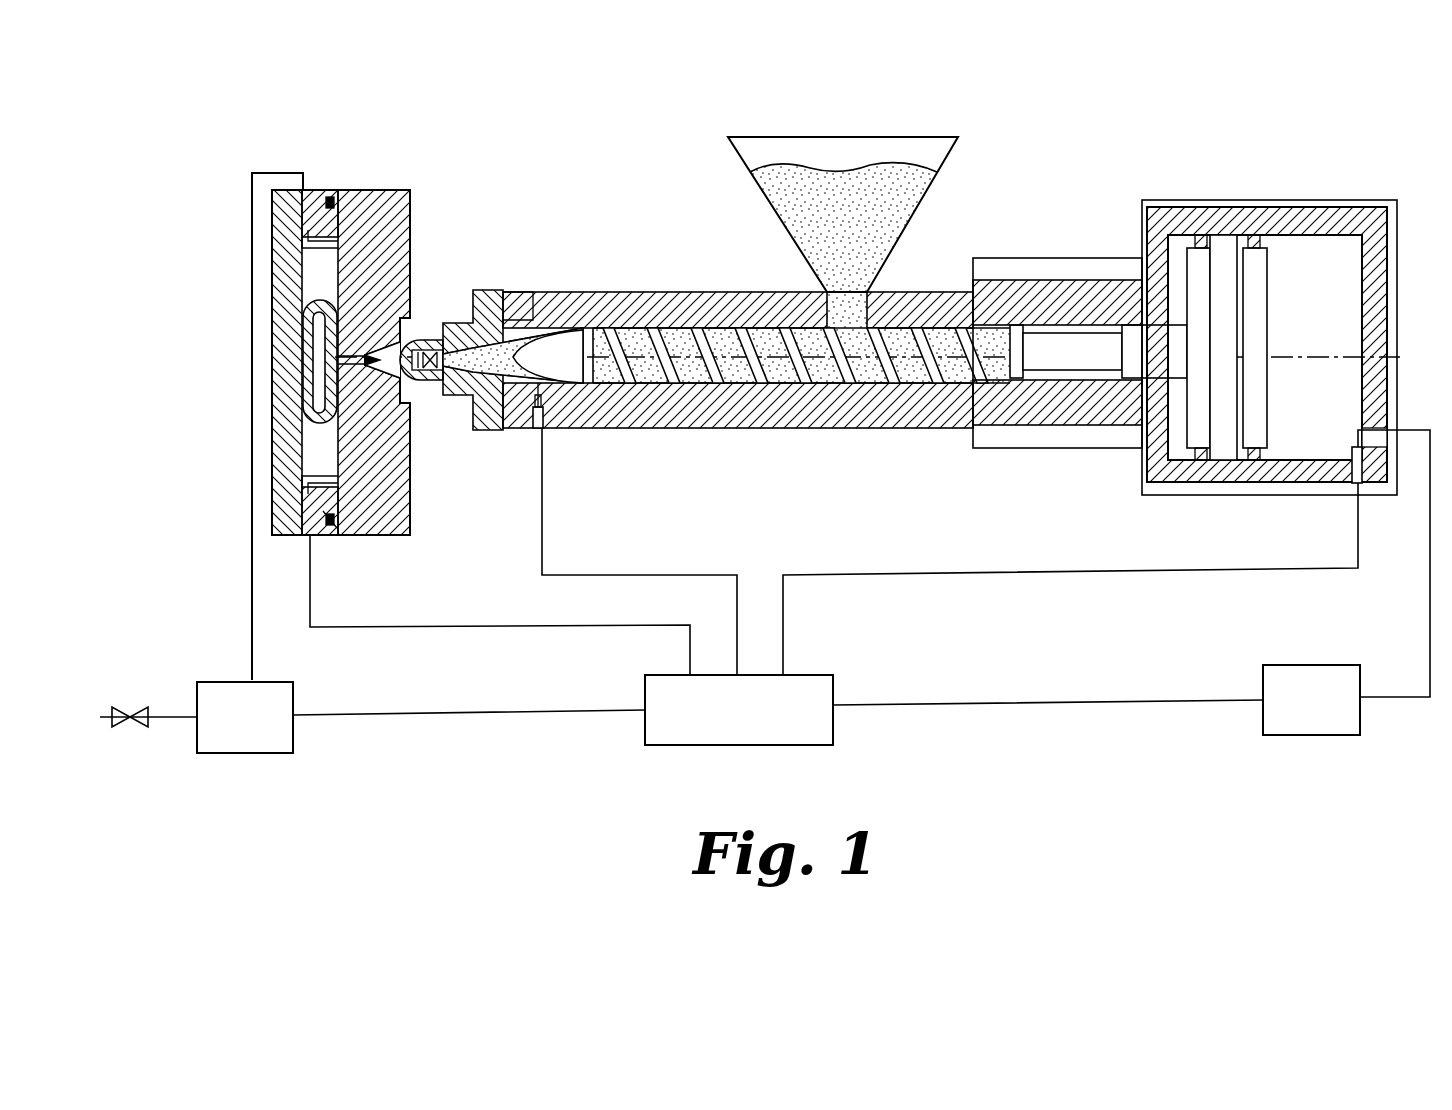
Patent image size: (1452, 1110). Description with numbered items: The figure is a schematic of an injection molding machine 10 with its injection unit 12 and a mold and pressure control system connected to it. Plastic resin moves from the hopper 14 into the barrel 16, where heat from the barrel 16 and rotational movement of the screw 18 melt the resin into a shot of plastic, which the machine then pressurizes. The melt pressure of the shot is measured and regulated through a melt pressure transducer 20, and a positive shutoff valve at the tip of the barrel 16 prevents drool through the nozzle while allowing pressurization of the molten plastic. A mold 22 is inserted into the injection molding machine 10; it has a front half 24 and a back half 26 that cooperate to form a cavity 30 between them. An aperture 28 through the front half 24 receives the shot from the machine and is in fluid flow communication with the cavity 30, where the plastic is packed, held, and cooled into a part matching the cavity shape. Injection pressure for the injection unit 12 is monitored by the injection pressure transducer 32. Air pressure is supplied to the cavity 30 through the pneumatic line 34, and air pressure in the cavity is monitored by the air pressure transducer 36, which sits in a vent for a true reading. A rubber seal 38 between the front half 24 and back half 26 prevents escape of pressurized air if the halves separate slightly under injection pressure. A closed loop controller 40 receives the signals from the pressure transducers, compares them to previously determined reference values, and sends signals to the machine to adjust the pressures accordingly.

The injection molding machine 10 is at (1062, 120).
The injection unit 12 is at (925, 283).
The hopper 14 is at (738, 160).
The barrel 16 is at (618, 292).
The screw 18 is at (710, 332).
The melt pressure transducer 20 is at (544, 430).
The mold 22 is at (428, 206).
The front half 24 is at (400, 190).
The back half 26 is at (326, 190).
The aperture 28 is at (372, 345).
The cavity 30 is at (300, 272).
The injection pressure transducer 32 is at (1358, 510).
The pneumatic line 34 is at (252, 252).
The air pressure transducer 36 is at (309, 535).
The rubber seal 38 is at (350, 535).
The closed loop controller 40 is at (838, 720).